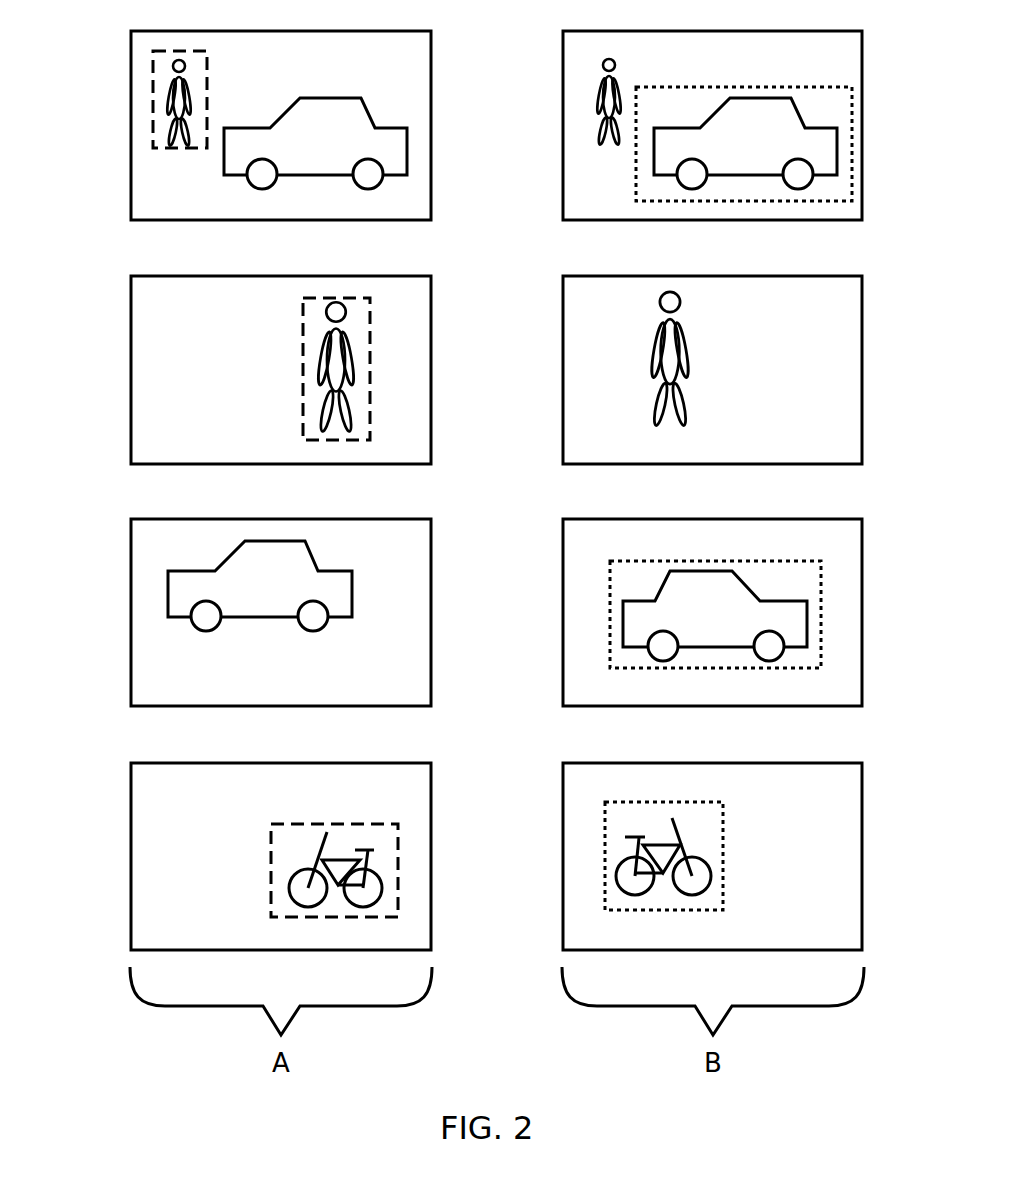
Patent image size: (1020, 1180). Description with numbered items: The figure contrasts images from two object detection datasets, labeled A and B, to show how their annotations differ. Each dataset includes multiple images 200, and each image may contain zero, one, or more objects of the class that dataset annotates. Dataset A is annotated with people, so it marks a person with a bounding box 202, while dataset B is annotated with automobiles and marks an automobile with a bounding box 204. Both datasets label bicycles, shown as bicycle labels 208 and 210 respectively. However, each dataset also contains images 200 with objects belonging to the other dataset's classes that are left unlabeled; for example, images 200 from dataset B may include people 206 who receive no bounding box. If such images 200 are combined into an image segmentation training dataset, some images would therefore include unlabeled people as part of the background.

The images 200 is at (191, 213).
The bounding box 202 is at (153, 108).
The bounding box 204 is at (821, 625).
The people 206 is at (600, 105).
The bicycle label 208 is at (271, 876).
The bicycle label 210 is at (723, 855).